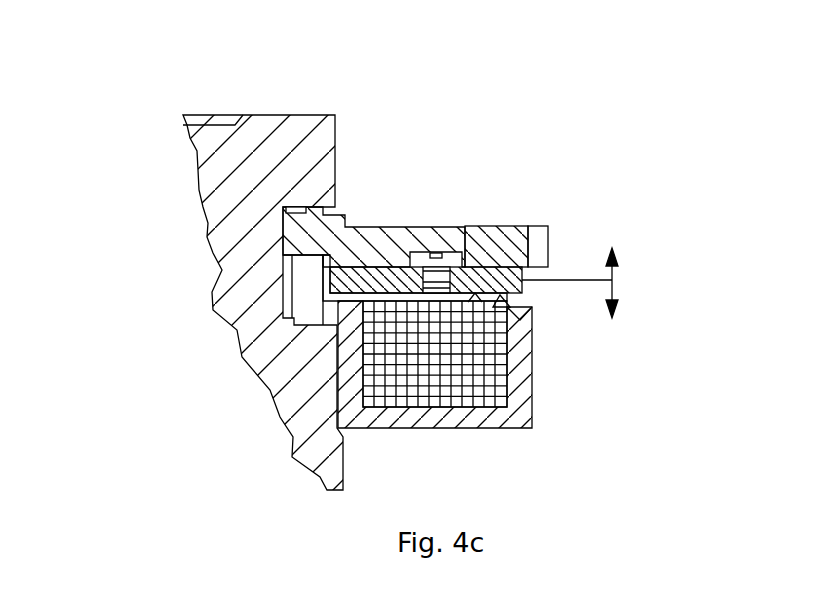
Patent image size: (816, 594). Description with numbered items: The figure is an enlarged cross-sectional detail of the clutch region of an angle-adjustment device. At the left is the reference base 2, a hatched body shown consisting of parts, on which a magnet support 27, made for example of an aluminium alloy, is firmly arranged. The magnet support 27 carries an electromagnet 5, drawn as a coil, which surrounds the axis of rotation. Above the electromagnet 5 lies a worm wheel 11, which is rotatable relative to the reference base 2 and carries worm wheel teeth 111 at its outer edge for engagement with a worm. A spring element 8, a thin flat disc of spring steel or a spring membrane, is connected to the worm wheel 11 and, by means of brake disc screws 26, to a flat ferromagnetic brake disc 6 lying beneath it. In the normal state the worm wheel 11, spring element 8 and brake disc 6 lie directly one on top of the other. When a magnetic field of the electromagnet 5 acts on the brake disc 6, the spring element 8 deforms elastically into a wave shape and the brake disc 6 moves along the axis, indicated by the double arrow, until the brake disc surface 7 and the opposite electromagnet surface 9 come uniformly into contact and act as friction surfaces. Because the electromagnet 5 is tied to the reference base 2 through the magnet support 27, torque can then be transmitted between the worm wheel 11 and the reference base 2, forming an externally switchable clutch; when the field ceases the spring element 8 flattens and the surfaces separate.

The reference base 2 is at (248, 256).
The spring element 8 is at (373, 268).
The brake disc 6 is at (395, 280).
The brake disc screws 26 is at (452, 257).
The worm wheel 11 is at (492, 248).
The worm wheel teeth 111 is at (539, 232).
The electromagnet surface 9 is at (473, 298).
The brake disc surface 7 is at (503, 300).
The electromagnet 5 is at (470, 353).
The magnet support 27 is at (497, 418).